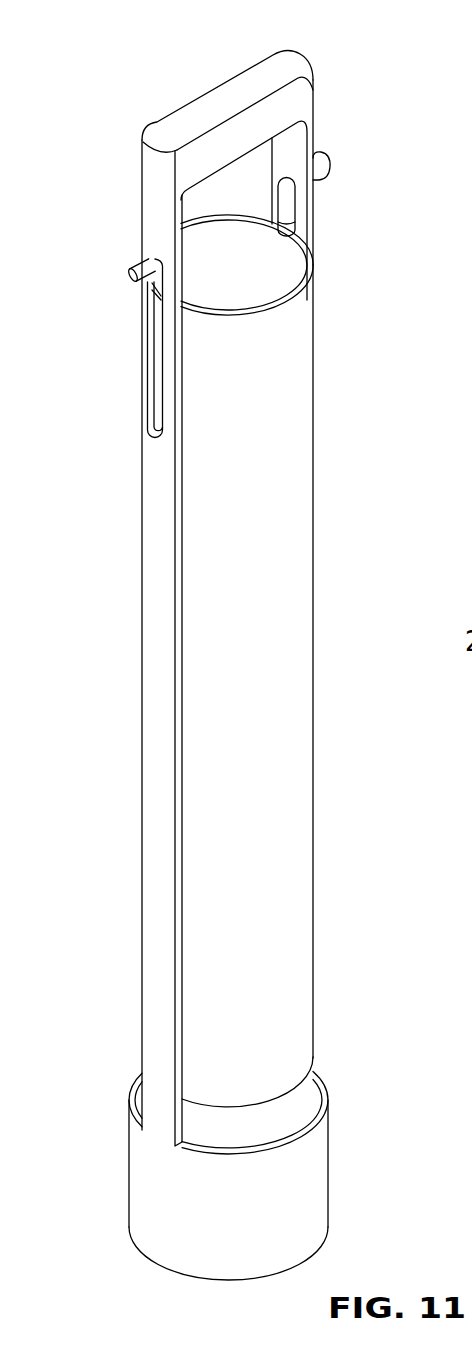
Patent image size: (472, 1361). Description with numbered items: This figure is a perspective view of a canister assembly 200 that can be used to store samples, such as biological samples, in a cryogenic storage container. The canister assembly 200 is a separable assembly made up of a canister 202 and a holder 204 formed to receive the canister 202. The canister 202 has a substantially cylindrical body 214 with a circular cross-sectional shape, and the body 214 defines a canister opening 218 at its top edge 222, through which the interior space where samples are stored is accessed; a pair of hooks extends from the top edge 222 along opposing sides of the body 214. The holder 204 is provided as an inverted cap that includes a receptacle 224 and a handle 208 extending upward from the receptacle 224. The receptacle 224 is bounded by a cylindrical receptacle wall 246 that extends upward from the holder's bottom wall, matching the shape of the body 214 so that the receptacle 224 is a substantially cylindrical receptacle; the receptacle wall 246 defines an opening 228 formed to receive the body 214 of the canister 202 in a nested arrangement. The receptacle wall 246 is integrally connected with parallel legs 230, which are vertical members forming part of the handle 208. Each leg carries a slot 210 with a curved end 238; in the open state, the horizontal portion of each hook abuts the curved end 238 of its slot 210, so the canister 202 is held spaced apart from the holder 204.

The canister assembly 200 is at (135, 42).
The handle 208 is at (217, 100).
The legs 230 is at (140, 902).
The slot 210 is at (160, 360).
The curved end 238 is at (158, 257).
The canister 202 is at (257, 542).
The body 214 is at (247, 1082).
The top edge 222 is at (306, 258).
The canister opening 218 is at (266, 285).
The holder 204 is at (170, 1202).
The receptacle 224 is at (228, 1253).
The receptacle wall 246 is at (228, 1163).
The opening 228 is at (263, 1125).